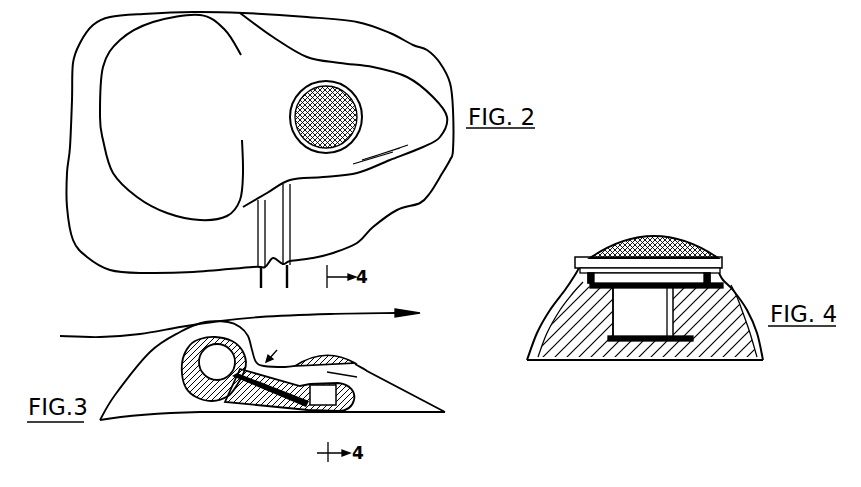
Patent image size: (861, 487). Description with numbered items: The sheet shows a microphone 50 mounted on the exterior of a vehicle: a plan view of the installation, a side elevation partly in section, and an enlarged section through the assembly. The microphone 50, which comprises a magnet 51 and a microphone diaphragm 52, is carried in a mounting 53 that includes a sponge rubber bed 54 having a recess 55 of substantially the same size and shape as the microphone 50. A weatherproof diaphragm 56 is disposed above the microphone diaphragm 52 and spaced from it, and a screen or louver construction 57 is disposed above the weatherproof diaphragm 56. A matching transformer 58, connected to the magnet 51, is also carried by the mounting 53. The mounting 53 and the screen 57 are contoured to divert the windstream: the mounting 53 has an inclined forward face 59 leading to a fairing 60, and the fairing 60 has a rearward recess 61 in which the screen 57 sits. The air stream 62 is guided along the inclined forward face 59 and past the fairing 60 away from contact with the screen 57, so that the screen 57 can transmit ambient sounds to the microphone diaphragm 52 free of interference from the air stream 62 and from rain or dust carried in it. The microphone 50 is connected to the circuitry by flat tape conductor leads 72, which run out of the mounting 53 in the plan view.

In FIG. 3, the microphone 50 is at (324, 398).
In FIG. 4, the microphone 50 is at (658, 313).
In FIG. 4, the magnet 51 is at (622, 318).
In FIG. 4, the microphone diaphragm 52 is at (720, 282).
In FIG. 2, the mounting 53 is at (160, 193).
In FIG. 3, the mounting 53 is at (143, 408).
In FIG. 4, the mounting 53 is at (547, 321).
In FIG. 3, the sponge rubber bed 54 is at (250, 403).
In FIG. 4, the sponge rubber bed 54 is at (725, 343).
In FIG. 4, the recess 55 is at (667, 341).
In FIG. 4, the weatherproof diaphragm 56 is at (723, 268).
In FIG. 3, the screen or louver construction 57 is at (343, 358).
In FIG. 4, the screen or louver construction 57 is at (667, 242).
In FIG. 3, the matching transformer 58 is at (215, 353).
In FIG. 3, the inclined forward face 59 is at (135, 374).
In FIG. 3, the fairing 60 is at (250, 323).
In FIG. 3, the rearward recess 61 is at (281, 347).
In FIG. 3, the air stream 62 is at (240, 323).
In FIG. 2, the flat tape conductor leads 72 is at (273, 237).